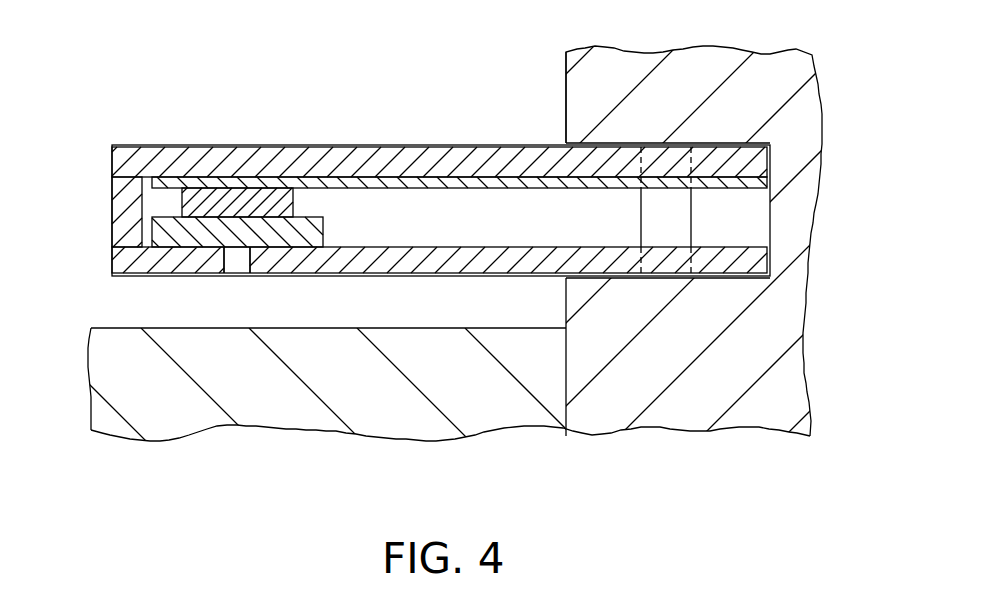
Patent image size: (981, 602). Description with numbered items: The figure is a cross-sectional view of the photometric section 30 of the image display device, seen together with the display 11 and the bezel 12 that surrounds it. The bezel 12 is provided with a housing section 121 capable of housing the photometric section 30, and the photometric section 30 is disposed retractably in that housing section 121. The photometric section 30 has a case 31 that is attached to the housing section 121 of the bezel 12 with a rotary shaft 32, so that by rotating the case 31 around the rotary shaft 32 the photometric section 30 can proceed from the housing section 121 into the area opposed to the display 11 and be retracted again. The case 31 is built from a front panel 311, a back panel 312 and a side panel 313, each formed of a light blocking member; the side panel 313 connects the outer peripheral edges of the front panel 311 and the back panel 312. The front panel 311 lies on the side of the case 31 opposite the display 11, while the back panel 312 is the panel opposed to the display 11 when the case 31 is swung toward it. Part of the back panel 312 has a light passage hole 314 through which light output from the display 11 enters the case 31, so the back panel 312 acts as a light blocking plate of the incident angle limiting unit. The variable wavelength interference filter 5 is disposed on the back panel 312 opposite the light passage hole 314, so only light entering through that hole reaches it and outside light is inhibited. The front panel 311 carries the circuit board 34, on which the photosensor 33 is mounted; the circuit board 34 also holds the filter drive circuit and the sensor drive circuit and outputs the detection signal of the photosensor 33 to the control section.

The photometric section 30 is at (403, 167).
The case 31 is at (403, 193).
The front panel 311 is at (282, 150).
The back panel 312 is at (423, 265).
The side panel 313 is at (112, 210).
The light passage hole 314 is at (227, 267).
The variable wavelength interference filter 5 is at (305, 236).
The photosensor 33 is at (285, 203).
The circuit board 34 is at (505, 189).
The rotary shaft 32 is at (641, 220).
The display 11 is at (91, 383).
The bezel 12 is at (577, 78).
The housing section 121 is at (573, 148).